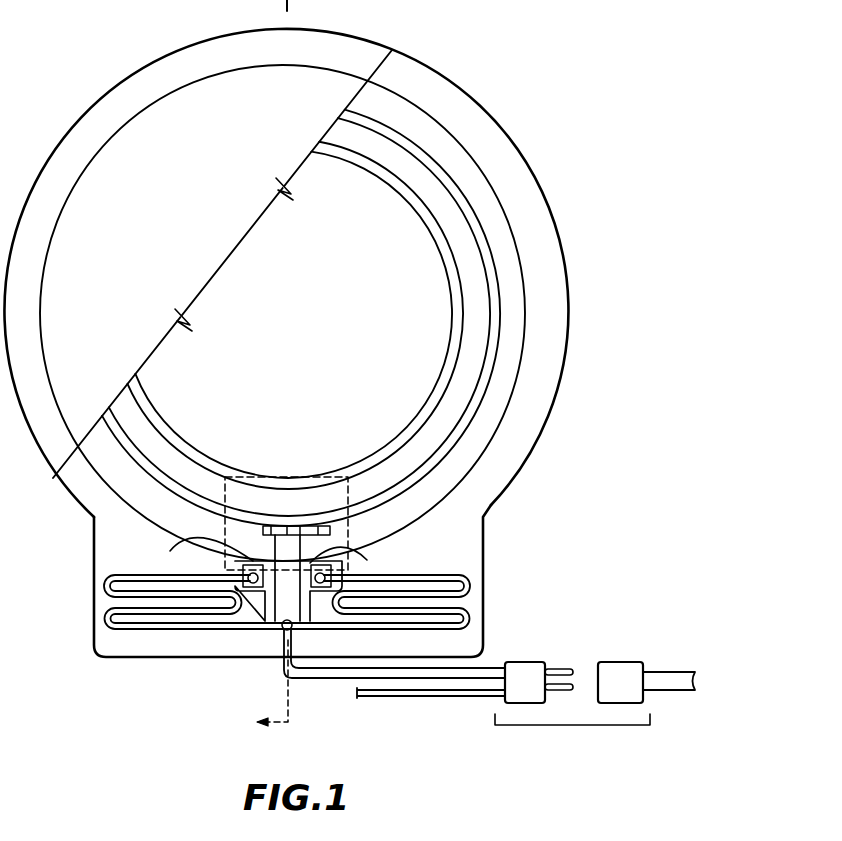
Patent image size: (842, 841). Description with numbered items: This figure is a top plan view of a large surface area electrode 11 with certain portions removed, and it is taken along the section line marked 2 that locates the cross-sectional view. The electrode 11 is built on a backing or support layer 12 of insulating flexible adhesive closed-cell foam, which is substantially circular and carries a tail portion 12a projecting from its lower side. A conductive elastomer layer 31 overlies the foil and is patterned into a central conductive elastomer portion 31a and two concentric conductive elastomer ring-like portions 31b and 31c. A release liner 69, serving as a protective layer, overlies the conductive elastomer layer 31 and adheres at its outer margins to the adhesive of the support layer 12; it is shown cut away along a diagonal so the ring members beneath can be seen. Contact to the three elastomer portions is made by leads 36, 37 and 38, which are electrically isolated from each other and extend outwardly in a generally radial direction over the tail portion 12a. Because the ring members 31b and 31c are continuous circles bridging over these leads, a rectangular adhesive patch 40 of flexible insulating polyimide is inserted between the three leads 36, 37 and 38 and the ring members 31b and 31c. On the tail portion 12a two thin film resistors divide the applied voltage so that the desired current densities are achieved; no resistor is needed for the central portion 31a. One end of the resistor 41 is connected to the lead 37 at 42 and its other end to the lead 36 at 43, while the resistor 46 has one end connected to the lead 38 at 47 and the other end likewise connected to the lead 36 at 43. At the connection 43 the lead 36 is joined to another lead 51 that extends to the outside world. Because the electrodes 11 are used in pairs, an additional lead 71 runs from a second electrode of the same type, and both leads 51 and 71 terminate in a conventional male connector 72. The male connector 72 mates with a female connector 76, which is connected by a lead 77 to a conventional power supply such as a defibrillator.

The large surface area electrode 11 is at (411, 52).
The backing or support layer 12 is at (558, 344).
The tail portion 12a is at (472, 558).
The conductive elastomer layer 31 is at (456, 136).
The central conductive elastomer portion 31a is at (308, 368).
The conductive elastomer ring-like portion 31b is at (455, 218).
The conductive elastomer ring-like portion 31c is at (513, 272).
The release liner 69 is at (212, 256).
The lead 36 is at (283, 522).
The lead 37 is at (317, 527).
The adhesive patch 40 is at (308, 477).
The lead 38 is at (252, 554).
The connection 47 is at (240, 558).
The connection 42 is at (345, 558).
The thin film resistor 46 is at (105, 623).
The thin film resistor 41 is at (468, 614).
The connection 43 is at (281, 633).
The section line 2 is at (272, 697).
The additional lead 71 is at (363, 697).
The lead 51 is at (492, 664).
The male connector 72 is at (530, 662).
The female connector 76 is at (614, 662).
The lead 77 is at (662, 690).